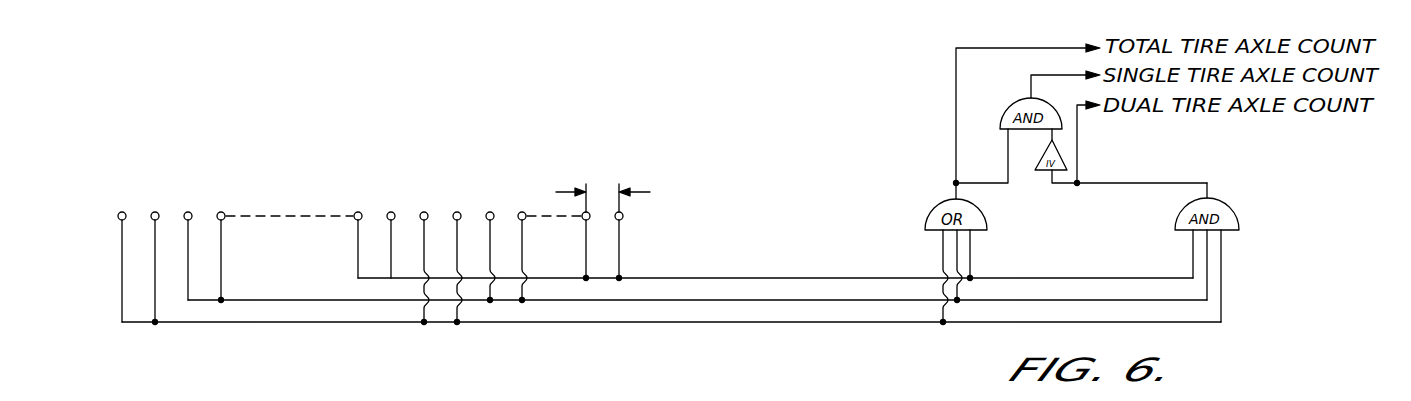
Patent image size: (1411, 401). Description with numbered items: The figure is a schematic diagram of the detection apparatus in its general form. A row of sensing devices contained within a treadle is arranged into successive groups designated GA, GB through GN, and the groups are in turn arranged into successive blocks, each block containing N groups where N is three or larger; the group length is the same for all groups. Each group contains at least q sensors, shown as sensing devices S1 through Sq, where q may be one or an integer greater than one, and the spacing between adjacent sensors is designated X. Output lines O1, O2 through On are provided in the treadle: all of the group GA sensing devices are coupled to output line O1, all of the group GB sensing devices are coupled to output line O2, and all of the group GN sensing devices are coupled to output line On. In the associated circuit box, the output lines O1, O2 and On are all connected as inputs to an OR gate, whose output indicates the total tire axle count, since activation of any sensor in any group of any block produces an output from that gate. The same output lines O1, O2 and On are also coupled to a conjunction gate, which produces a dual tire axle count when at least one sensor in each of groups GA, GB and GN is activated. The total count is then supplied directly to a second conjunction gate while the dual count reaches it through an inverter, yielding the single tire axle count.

The sensor group A GA is at (172, 180).
The sensor group B GB is at (232, 180).
The sensor group N GN is at (236, 162).
The first sensing device S1 is at (124, 254).
The qth sensing device Sq is at (160, 254).
The spacing between adjacent sensors X is at (603, 197).
The first output line O1 is at (206, 323).
The second output line O2 is at (281, 300).
The nth output line On is at (710, 278).